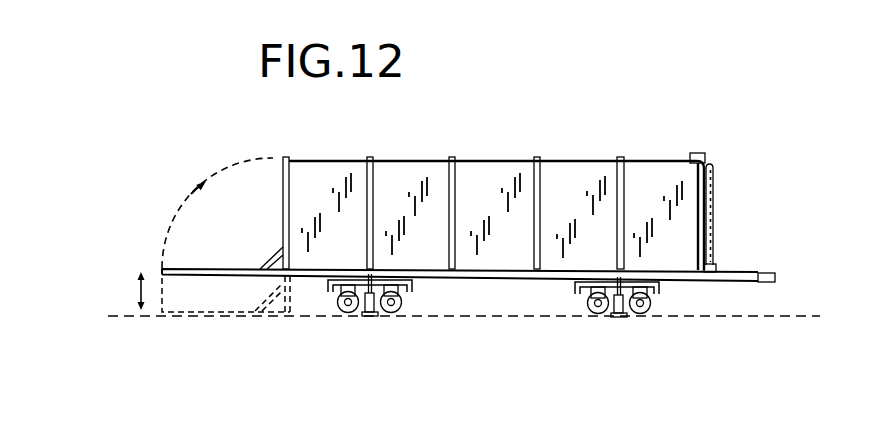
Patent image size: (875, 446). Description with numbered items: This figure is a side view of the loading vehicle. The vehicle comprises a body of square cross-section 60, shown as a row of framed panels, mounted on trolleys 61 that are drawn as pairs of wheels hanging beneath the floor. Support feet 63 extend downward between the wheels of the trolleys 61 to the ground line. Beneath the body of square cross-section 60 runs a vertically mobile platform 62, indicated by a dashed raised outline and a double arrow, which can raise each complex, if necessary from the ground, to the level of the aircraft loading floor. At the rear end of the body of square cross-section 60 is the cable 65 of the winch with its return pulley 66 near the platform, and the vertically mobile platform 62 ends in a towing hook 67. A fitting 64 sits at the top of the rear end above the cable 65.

The body of square cross-section 60 is at (592, 172).
The trolleys 61 is at (410, 303).
The vertically mobile platform 62 is at (212, 275).
The support feet 63 is at (620, 318).
The top fitting 64 is at (697, 153).
The cable 65 is at (713, 200).
The return pulley 66 is at (715, 264).
The towing hook 67 is at (776, 277).